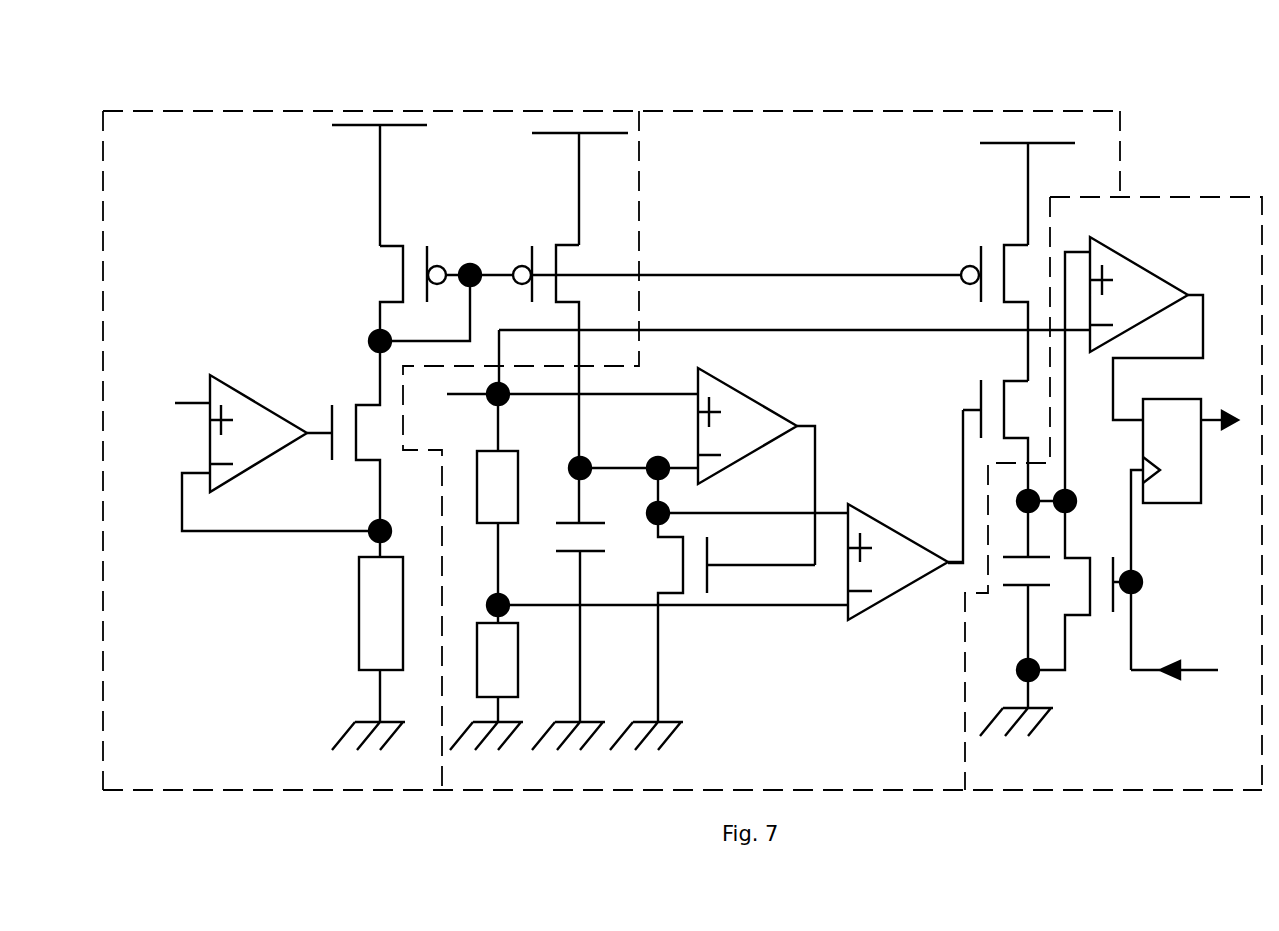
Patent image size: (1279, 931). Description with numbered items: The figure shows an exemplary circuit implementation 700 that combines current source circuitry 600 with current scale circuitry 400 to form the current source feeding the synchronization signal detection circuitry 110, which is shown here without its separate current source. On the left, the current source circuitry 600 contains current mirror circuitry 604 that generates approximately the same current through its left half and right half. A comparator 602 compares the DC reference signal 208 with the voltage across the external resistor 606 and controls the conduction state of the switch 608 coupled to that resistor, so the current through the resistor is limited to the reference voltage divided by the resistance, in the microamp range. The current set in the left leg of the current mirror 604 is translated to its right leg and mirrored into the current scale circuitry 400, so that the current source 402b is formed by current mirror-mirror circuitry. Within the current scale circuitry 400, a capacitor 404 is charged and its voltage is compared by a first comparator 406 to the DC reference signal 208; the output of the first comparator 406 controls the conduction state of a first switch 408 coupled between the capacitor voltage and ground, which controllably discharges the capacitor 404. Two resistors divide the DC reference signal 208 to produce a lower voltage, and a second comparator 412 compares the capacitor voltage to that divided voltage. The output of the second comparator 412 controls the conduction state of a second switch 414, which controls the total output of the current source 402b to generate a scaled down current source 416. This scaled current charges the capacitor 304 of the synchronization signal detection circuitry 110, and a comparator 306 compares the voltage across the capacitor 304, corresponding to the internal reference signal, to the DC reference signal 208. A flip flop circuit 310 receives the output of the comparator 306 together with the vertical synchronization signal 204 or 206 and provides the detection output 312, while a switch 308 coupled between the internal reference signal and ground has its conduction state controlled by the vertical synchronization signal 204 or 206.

The circuit implementation 700 is at (985, 41).
The current source circuitry 600 is at (187, 111).
The current scale circuitry 400 is at (697, 111).
The synchronization signal detection circuitry 110 is at (1235, 197).
The current mirror circuitry 604 is at (525, 347).
The current source 402b is at (974, 297).
The comparator 306 is at (1134, 369).
The DC reference signal Vpeak 208 is at (435, 399).
The comparator 602 is at (277, 453).
The switch 608 is at (359, 449).
The resistor Rext 606 is at (359, 653).
The first comparator 406 is at (756, 466).
The second comparator 412 is at (905, 559).
The second switch 414 is at (988, 464).
The scaled down current source 416 is at (1063, 493).
The capacitor C 304 is at (1016, 618).
The switch 308 is at (1079, 585).
The flip flop circuit 310 is at (1160, 534).
The output signal 312 is at (1219, 402).
The capacitor C1 404 is at (568, 603).
The first switch 408 is at (712, 609).
The vertical synchronization signal 204 is at (1168, 695).
The vertical synchronization signal 206 is at (1168, 695).